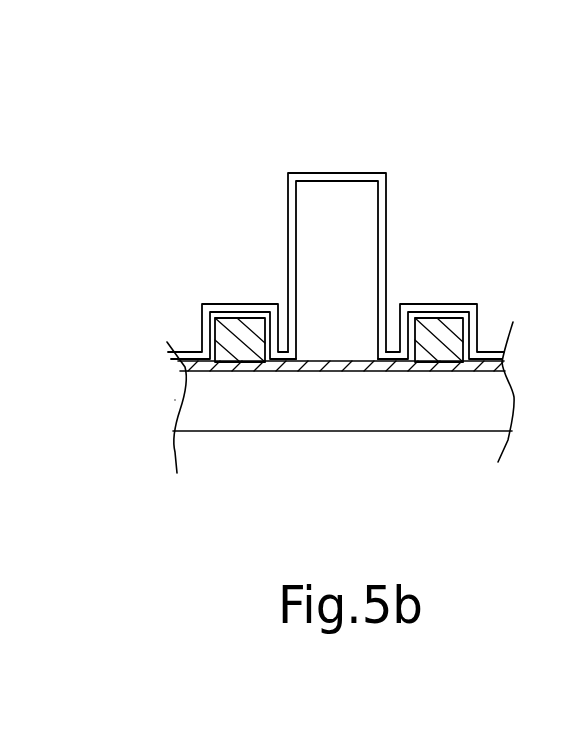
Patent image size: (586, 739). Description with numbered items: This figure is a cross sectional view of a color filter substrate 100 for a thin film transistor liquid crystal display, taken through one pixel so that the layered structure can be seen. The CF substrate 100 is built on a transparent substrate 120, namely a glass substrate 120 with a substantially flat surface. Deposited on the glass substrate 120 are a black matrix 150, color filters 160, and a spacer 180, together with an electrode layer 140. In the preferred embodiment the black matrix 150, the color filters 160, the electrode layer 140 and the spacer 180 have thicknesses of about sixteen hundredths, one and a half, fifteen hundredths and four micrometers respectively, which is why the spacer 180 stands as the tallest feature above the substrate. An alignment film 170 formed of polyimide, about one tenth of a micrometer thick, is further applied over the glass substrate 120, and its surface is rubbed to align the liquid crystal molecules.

The color filter substrate 100 is at (192, 128).
The transparent substrate 120 is at (408, 420).
The electrode layer 140 is at (433, 312).
The black matrix 150 is at (288, 371).
The color filters 160 is at (443, 334).
The alignment film 170 is at (422, 304).
The spacer 180 is at (364, 233).